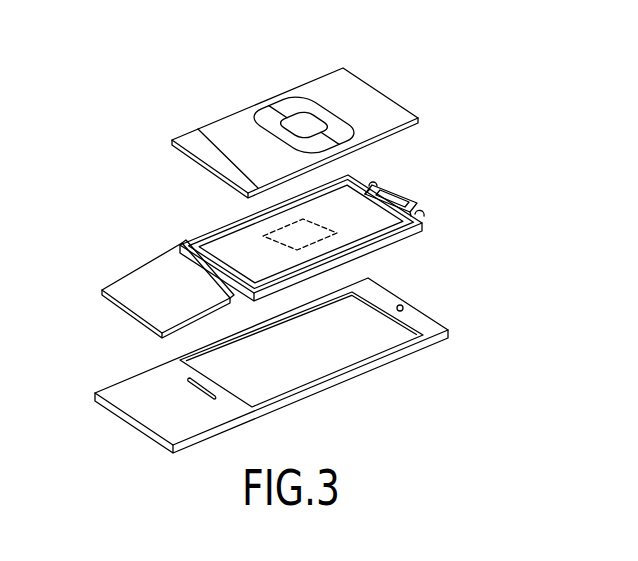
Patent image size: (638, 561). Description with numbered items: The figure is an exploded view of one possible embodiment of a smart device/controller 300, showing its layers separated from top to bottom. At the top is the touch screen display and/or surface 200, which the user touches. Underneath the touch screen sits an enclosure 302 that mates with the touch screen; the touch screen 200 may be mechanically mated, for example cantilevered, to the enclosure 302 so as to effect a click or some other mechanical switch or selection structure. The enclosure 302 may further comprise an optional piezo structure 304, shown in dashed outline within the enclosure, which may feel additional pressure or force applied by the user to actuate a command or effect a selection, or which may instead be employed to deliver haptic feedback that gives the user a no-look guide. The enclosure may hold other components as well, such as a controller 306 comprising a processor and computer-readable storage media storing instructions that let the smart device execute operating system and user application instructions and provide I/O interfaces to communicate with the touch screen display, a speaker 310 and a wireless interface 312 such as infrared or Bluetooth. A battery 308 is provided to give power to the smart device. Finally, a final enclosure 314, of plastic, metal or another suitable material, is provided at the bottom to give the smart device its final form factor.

The touch screen display and/or surface 200 is at (383, 85).
The smart device/controller 300 is at (514, 76).
The enclosure 302 is at (408, 235).
The piezo structure 304 is at (277, 231).
The controller 306 is at (145, 300).
The battery 308 is at (188, 263).
The speaker 310 is at (400, 192).
The wireless interface 312 is at (421, 215).
The final enclosure 314 is at (425, 348).